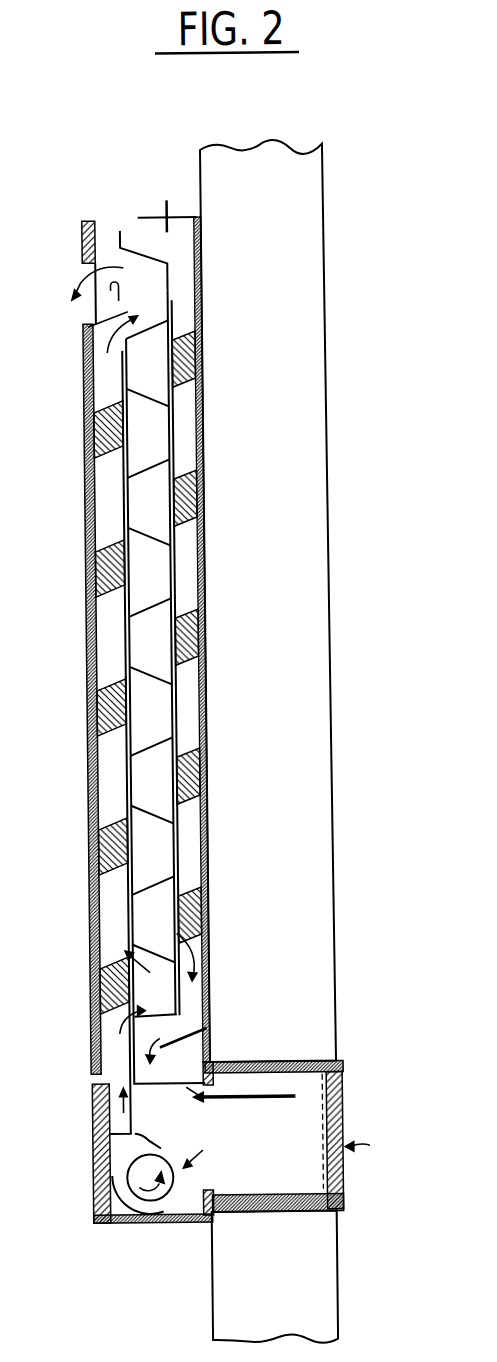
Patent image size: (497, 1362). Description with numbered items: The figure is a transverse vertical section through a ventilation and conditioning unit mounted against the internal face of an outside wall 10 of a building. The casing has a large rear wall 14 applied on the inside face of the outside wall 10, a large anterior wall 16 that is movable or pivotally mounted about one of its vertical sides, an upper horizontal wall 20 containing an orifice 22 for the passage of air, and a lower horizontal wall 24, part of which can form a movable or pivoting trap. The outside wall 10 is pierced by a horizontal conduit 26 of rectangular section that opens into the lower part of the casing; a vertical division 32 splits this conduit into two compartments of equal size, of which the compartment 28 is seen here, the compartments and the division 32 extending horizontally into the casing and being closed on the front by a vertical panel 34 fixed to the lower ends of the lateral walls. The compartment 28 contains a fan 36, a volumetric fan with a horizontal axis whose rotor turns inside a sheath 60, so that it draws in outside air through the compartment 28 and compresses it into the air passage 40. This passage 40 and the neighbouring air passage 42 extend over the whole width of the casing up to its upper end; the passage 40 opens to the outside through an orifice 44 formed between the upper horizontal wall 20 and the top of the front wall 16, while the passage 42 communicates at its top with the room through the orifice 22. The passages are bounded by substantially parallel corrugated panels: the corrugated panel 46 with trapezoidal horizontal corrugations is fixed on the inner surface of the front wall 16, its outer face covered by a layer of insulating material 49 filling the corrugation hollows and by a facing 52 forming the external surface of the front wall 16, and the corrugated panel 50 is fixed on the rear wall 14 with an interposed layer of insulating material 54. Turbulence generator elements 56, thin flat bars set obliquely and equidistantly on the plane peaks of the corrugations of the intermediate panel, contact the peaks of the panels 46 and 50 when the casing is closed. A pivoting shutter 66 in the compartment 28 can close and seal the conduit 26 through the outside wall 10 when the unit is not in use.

The outside wall 10 is at (292, 745).
The rear wall 14 is at (202, 912).
The anterior wall 16 is at (78, 545).
The upper horizontal wall 20 is at (99, 210).
The orifice 22 is at (149, 215).
The lower horizontal wall 24 is at (154, 1223).
The horizontal conduit 26 is at (290, 1063).
The compartment 28 is at (274, 1190).
The vertical division 32 is at (334, 1118).
The vertical panel 34 is at (82, 1097).
The fan 36 is at (116, 1178).
The air passage 40 is at (101, 620).
The air passage 42 is at (180, 568).
The orifice 44 is at (94, 267).
The corrugated panel 46 is at (118, 396).
The layer of insulating material 49 is at (91, 432).
The corrugated panel 50 is at (201, 500).
The facing 52 is at (81, 484).
The layer of insulating material 54 is at (193, 352).
The turbulence generator elements 56 is at (165, 738).
The sheath 60 is at (110, 1222).
The pivoting shutter 66 is at (236, 1100).